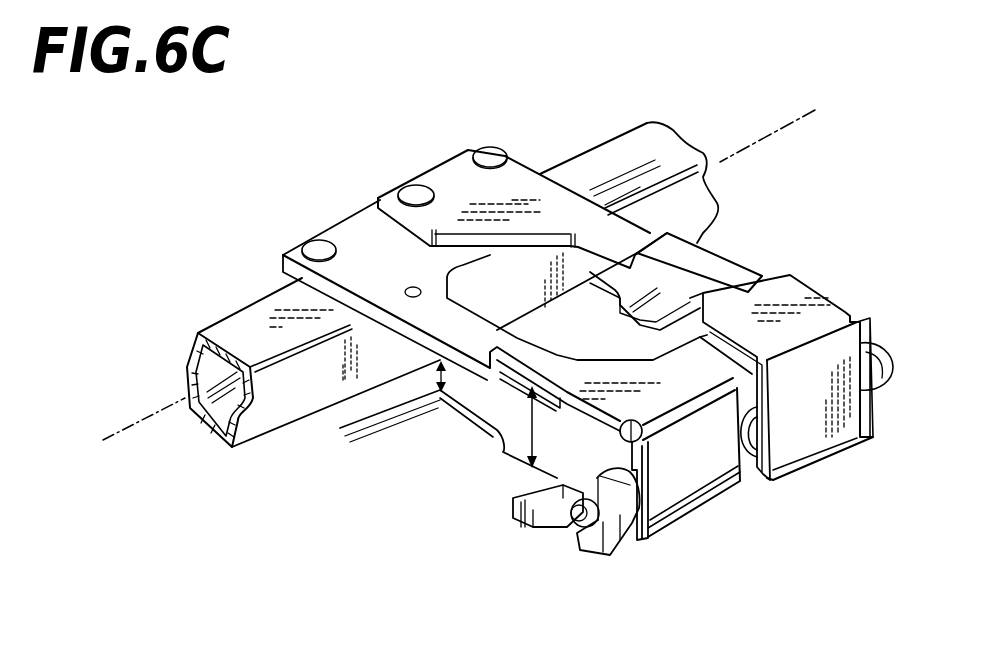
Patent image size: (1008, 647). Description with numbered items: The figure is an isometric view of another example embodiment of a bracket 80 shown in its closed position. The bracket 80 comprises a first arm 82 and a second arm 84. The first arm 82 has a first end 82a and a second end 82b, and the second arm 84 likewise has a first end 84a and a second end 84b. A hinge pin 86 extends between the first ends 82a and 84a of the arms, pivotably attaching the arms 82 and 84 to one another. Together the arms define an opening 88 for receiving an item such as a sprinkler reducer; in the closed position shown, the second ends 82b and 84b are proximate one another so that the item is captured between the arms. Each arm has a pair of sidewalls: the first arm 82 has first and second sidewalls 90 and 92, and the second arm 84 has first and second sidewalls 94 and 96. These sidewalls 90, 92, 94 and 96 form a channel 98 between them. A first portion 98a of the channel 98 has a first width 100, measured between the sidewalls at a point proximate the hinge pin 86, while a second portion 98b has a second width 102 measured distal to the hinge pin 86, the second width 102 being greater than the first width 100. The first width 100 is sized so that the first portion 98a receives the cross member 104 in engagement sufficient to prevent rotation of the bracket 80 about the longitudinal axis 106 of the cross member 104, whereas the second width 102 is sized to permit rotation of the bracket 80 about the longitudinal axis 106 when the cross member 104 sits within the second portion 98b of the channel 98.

The bracket 80 is at (612, 94).
The first arm 82 is at (445, 410).
The first end of first arm 82a is at (365, 220).
The second end of first arm 82b is at (678, 487).
The second arm 84 is at (733, 265).
The first end of second arm 84a is at (460, 178).
The second end of second arm 84b is at (800, 440).
The hinge pin 86 is at (416, 193).
The opening 88 is at (570, 335).
The first sidewall of first arm 90 is at (492, 415).
The second sidewall of first arm 92 is at (278, 303).
The first sidewall of second arm 94 is at (753, 283).
The second sidewall of second arm 96 is at (710, 265).
The channel 98 is at (395, 425).
The first portion of channel 98a is at (394, 425).
The second portion of channel 98b is at (550, 467).
The first width 100 is at (430, 368).
The second width 102 is at (515, 470).
The cross member 104 is at (270, 405).
The longitudinal axis 106 is at (160, 414).